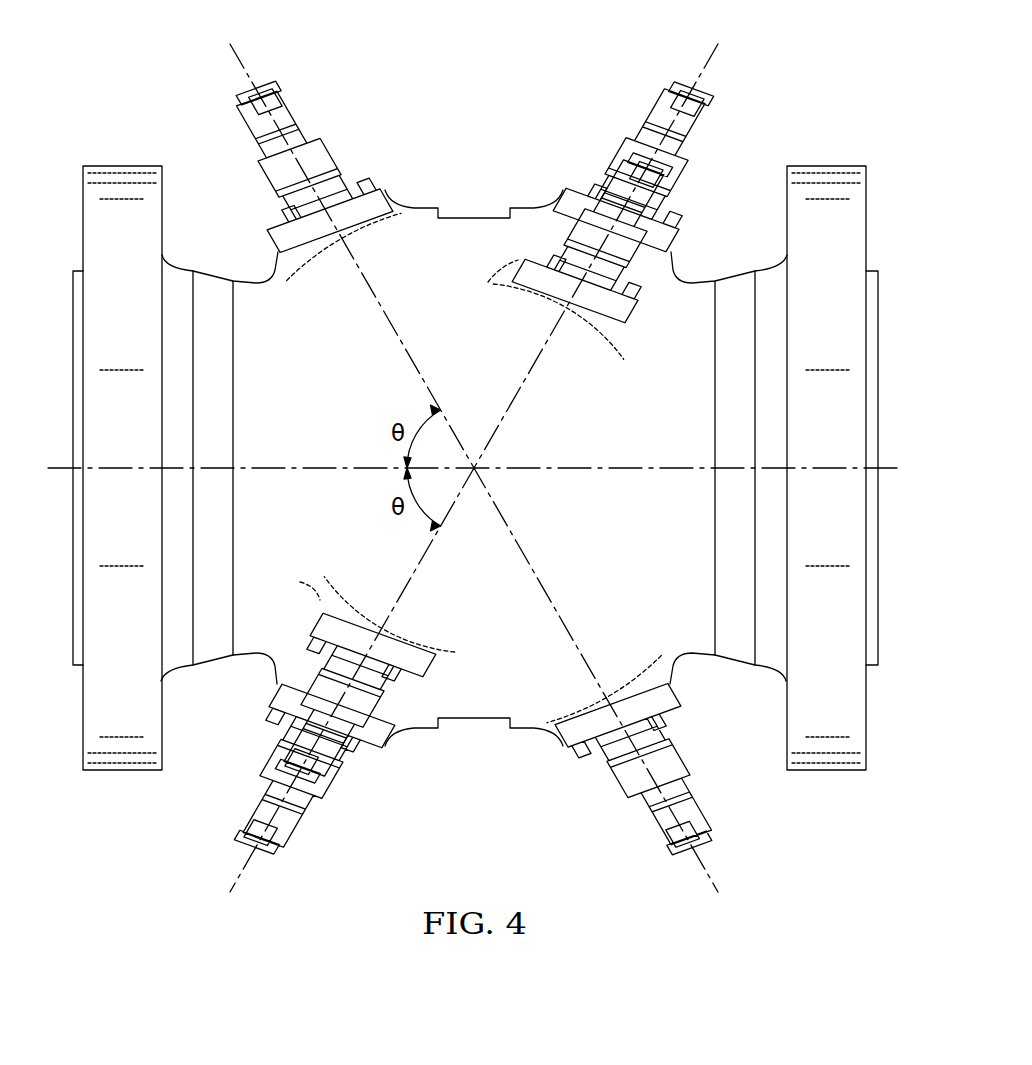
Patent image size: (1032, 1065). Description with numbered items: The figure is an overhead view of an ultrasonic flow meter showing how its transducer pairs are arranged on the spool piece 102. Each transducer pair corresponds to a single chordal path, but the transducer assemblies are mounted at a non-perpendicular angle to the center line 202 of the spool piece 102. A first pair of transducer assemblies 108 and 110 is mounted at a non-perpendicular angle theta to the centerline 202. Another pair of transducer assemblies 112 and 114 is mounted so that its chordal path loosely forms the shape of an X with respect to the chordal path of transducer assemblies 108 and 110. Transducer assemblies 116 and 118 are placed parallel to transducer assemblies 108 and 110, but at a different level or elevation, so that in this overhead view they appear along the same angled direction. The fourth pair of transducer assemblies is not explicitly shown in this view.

The spool piece 102 is at (478, 208).
The centerline 202 is at (597, 471).
The transducer assembly 108 is at (321, 619).
The transducer assembly 110 is at (627, 317).
The transducer assembly 112 is at (612, 783).
The transducer assembly 114 is at (336, 153).
The transducer assembly 116 is at (291, 833).
The transducer assembly 118 is at (657, 103).